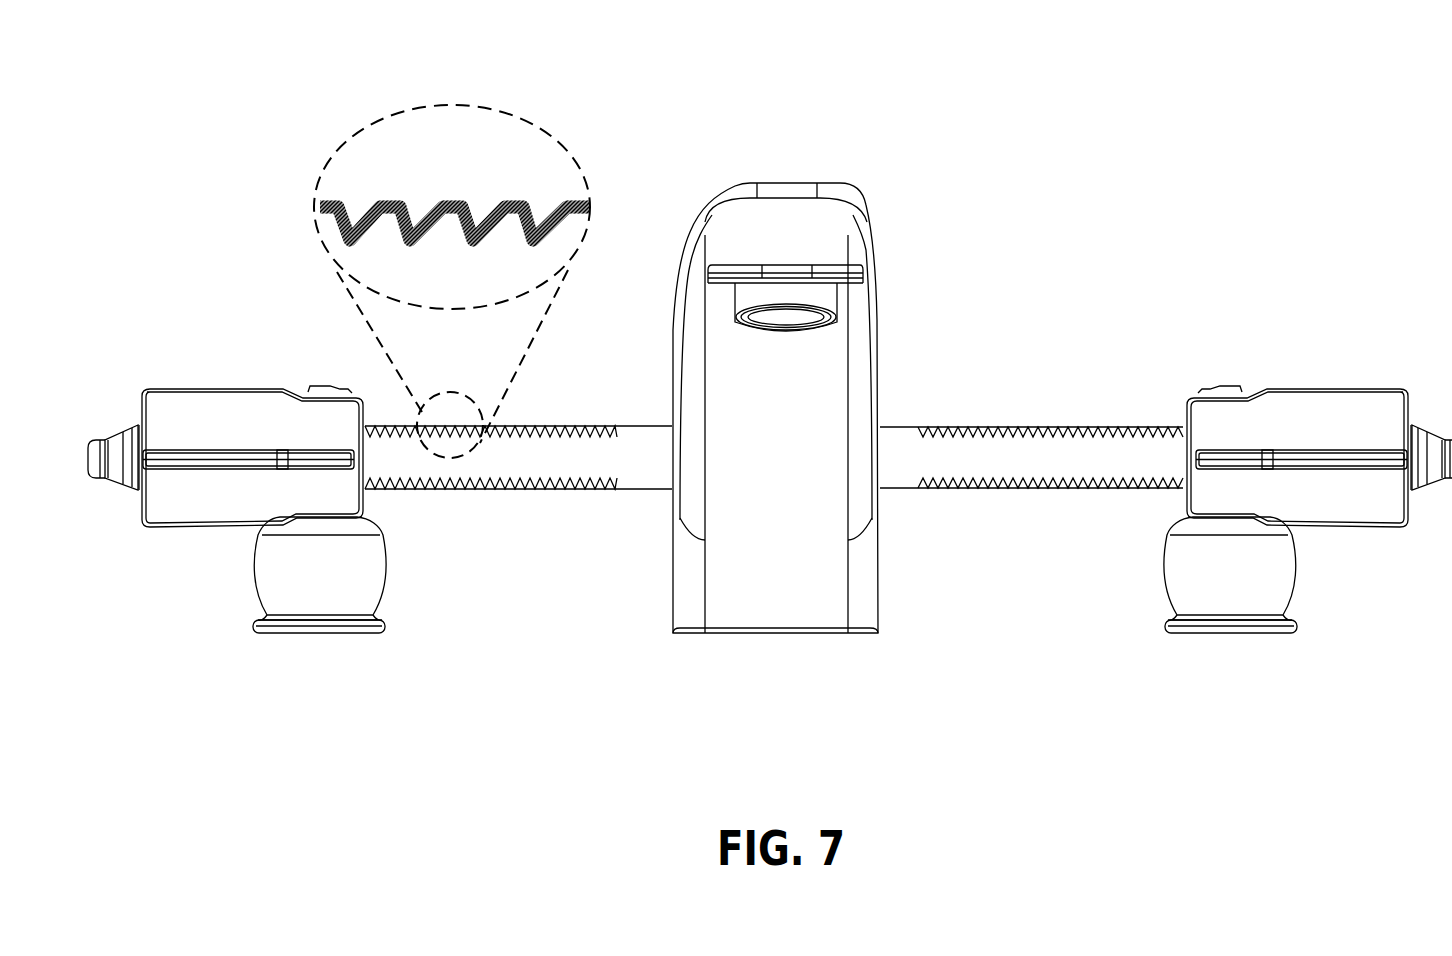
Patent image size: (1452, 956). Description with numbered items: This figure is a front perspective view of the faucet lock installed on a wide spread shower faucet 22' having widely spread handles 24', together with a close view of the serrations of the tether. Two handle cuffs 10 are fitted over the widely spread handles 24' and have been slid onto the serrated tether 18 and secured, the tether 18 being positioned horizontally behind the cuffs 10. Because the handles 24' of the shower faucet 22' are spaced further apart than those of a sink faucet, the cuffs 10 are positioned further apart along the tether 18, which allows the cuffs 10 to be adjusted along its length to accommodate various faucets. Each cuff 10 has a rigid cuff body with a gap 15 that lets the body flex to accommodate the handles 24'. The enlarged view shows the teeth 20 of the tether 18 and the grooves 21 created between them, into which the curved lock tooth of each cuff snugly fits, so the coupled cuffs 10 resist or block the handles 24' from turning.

The handle cuff 10 is at (223, 383).
The gap 15 is at (326, 452).
The tether 18 is at (900, 480).
The teeth 20 is at (518, 186).
The grooves 21 is at (425, 205).
The shower faucet 22' is at (775, 462).
The widely spread handles 24' is at (770, 544).